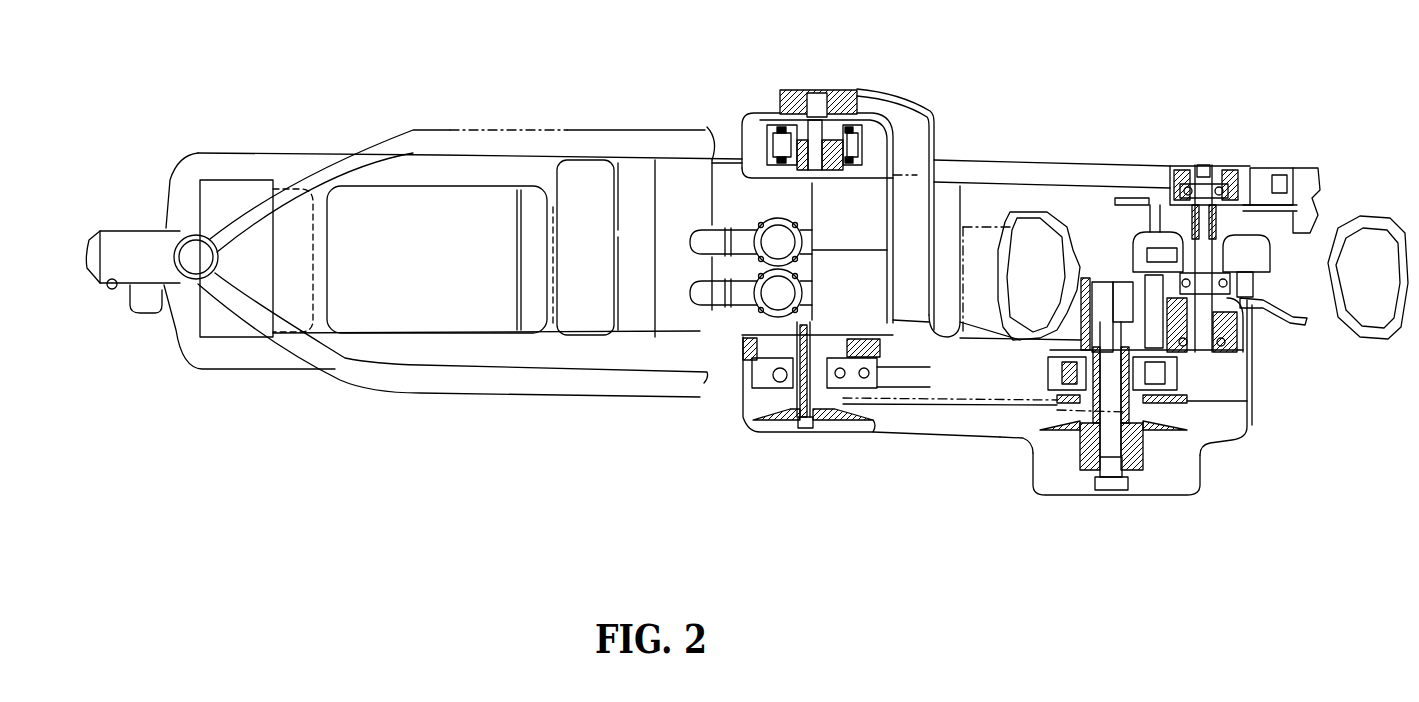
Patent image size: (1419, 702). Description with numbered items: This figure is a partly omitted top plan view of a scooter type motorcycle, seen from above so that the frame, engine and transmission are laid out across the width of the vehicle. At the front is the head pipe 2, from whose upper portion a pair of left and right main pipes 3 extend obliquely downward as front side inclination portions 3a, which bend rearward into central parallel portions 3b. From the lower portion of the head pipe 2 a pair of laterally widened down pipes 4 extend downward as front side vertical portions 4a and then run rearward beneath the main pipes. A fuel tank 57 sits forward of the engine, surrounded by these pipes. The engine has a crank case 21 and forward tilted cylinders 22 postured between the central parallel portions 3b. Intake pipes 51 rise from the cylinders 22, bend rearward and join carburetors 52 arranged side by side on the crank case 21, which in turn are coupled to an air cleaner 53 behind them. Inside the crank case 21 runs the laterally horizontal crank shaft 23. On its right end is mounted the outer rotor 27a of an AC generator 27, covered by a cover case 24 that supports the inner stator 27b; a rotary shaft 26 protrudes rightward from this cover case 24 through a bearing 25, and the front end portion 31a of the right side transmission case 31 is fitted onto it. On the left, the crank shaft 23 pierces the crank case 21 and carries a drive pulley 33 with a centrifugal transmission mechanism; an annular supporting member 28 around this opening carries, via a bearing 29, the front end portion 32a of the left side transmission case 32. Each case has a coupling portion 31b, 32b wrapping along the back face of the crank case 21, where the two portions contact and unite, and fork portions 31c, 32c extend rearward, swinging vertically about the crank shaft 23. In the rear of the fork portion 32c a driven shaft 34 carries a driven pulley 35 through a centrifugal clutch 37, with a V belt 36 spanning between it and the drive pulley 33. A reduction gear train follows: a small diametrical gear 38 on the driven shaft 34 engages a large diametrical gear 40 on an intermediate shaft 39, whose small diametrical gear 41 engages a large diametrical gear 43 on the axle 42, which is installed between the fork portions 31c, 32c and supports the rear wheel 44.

The head pipe 2 is at (145, 249).
The main pipe 3 is at (453, 277).
The front side inclination portion 3a is at (300, 183).
The central parallel portion 3b is at (562, 138).
The down pipe 4 is at (452, 276).
The front side vertical portion 4a is at (200, 165).
The crank case 21 is at (880, 247).
The cylinder 22 is at (637, 190).
The crank shaft 23 is at (763, 133).
The cover case 24 is at (782, 128).
The bearing 25 is at (793, 120).
The rotary shaft 26 is at (820, 93).
The AC generator 27 is at (945, 120).
The outer rotor 27a is at (862, 152).
The inner stator 27b is at (852, 128).
The annular supporting member 28 is at (872, 376).
The bearing 29 is at (882, 352).
The right side transmission case 31 is at (1088, 180).
The front end portion 31a is at (868, 100).
The coupling portion 31b is at (936, 208).
The fork portion 31c is at (1130, 165).
The left side transmission case 32 is at (1017, 325).
The front end portion 32a is at (740, 357).
The coupling portion 32b is at (943, 322).
The fork portion 32c is at (1255, 373).
The drive pulley 33 is at (830, 427).
The driven shaft 34 is at (1112, 430).
The driven pulley 35 is at (1151, 443).
The V belt 36 is at (960, 403).
The centrifugal clutch 37 is at (1033, 374).
The small diametrical gear 38 is at (1096, 290).
The intermediate shaft 39 is at (1136, 258).
The large diametrical gear 40 is at (1155, 288).
The small diametrical gear 41 is at (1087, 337).
The axle 42 is at (1237, 262).
The large diametrical gear 43 is at (1253, 333).
The rear wheel 44 is at (1365, 215).
The intake pipe 51 is at (703, 238).
The carburetor 52 is at (772, 245).
The air cleaner 53 is at (965, 227).
The fuel tank 57 is at (403, 310).